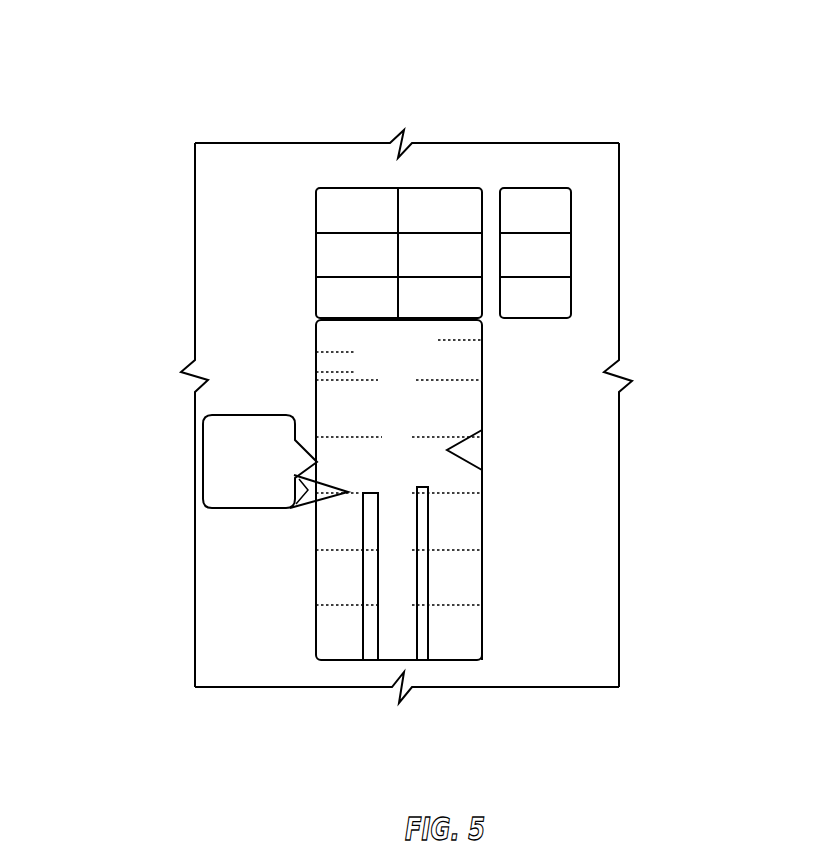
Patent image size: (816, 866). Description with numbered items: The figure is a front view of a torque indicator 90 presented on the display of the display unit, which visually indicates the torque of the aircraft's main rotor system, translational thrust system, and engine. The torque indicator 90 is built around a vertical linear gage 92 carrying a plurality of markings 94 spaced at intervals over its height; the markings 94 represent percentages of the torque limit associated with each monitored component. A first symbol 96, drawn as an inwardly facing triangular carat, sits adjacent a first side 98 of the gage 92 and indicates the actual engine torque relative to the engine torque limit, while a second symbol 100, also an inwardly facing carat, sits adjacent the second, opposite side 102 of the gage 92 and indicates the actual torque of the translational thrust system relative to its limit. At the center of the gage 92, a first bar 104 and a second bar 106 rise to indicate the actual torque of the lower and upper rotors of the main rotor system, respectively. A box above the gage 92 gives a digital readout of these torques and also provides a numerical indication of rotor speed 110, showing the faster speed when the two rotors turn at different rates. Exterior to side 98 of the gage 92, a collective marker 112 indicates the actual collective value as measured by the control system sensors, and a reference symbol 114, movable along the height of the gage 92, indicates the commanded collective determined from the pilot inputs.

The torque indicator 90 is at (166, 82).
The linear gage 92 is at (316, 662).
The markings 94 is at (375, 188).
The first symbol 96 is at (327, 496).
The first side 98 is at (316, 592).
The second symbol 100 is at (472, 452).
The second side 102 is at (482, 630).
The first bar 104 is at (370, 653).
The second bar 106 is at (428, 648).
The numerical indication of rotor speed 110 is at (562, 252).
The collective marker 112 is at (210, 455).
The reference symbol 114 is at (305, 507).